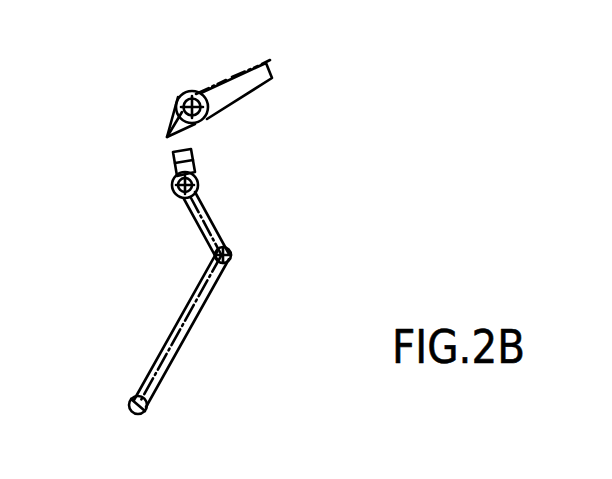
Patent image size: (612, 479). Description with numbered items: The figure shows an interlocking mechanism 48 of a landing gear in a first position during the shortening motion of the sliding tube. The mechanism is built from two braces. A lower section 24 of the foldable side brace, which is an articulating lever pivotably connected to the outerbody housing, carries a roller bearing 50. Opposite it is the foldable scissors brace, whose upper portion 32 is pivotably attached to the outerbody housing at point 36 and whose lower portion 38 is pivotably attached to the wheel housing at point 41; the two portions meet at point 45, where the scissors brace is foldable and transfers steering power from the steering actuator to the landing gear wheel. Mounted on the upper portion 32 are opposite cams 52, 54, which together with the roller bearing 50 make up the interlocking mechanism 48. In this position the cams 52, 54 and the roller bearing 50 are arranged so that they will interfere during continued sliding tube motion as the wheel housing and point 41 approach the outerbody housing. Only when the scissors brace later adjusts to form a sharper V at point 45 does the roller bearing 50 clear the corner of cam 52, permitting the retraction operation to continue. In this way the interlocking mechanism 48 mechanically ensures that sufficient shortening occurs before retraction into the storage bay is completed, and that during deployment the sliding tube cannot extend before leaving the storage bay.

The lower section 24 is at (243, 72).
The roller bearing 50 is at (167, 137).
The cam 52 is at (173, 162).
The point 36 is at (172, 190).
The upper portion 32 is at (210, 215).
The point 45 is at (233, 257).
The lower portion 38 is at (203, 315).
The point 41 is at (128, 404).
The cam 54 is at (206, 158).
The interlocking mechanism 48 is at (314, 157).